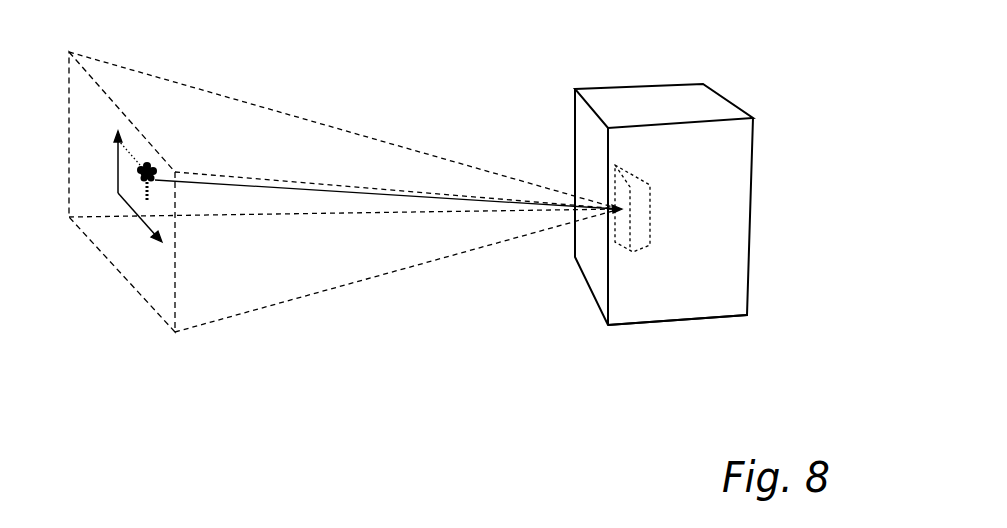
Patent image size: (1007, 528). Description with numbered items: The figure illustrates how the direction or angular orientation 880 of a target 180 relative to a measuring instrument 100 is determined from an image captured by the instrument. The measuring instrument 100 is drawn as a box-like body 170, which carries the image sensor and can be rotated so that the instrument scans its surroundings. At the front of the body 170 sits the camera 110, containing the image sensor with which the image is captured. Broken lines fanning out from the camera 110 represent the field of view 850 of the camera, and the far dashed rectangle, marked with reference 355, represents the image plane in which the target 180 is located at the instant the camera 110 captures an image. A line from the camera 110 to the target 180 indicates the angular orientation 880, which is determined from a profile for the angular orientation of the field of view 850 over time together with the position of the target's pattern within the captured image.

The measuring instrument 100 is at (616, 61).
The camera 110 is at (634, 178).
The body 170 is at (717, 320).
The target 180 is at (150, 165).
The field of view frustum near plane 355 is at (75, 147).
The field of view 850 is at (304, 142).
The angular orientation 880 is at (295, 190).